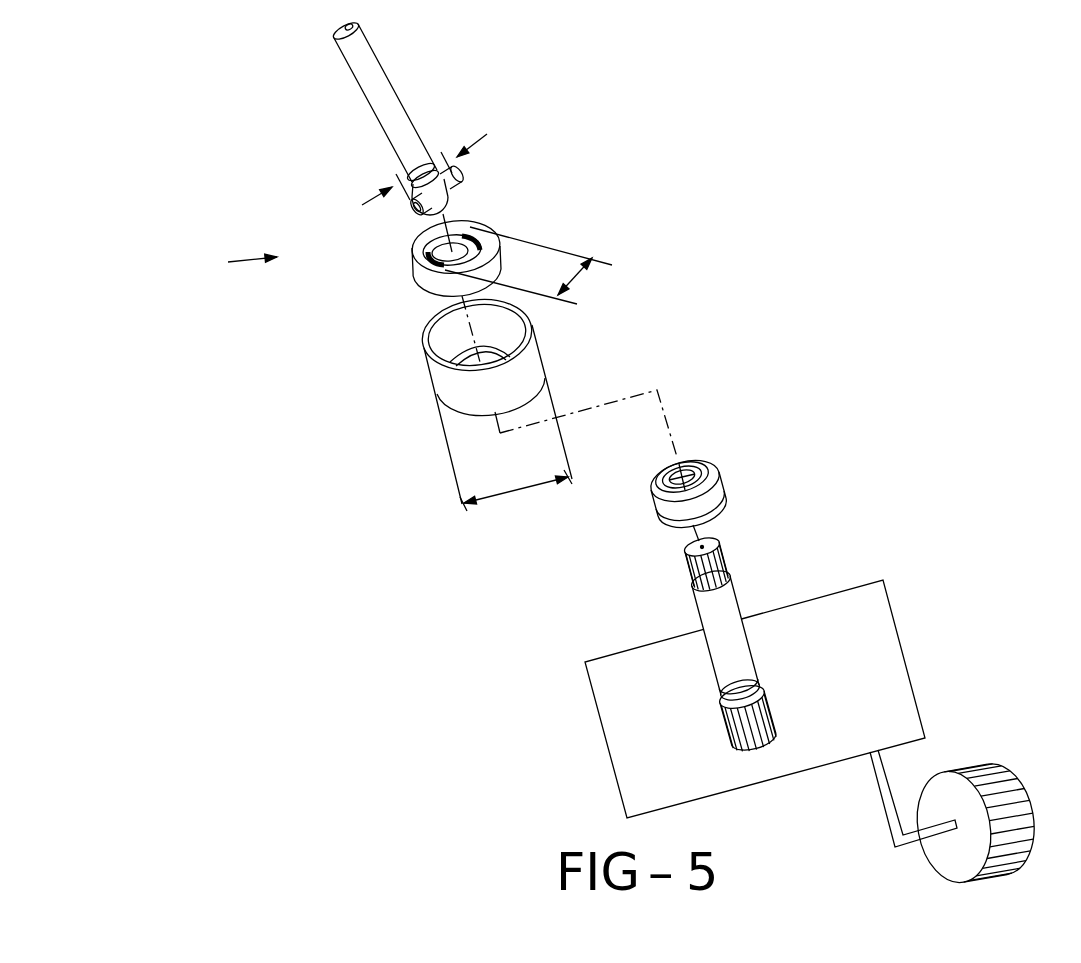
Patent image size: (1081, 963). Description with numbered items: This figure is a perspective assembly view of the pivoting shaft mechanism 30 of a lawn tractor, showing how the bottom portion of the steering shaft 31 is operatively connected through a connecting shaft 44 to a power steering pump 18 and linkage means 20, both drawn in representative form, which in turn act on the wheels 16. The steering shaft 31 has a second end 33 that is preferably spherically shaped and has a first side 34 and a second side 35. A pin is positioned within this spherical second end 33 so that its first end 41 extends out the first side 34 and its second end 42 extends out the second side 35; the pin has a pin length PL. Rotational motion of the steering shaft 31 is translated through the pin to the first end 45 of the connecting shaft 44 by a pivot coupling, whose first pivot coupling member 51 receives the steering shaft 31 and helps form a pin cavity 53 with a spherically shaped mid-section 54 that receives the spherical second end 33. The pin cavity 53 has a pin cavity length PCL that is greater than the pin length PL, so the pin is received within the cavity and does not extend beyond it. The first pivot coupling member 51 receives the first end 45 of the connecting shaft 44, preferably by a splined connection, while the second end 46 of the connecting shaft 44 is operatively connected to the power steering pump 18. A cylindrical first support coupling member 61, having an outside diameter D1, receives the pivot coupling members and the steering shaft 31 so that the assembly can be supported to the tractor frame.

The wheels 16 is at (997, 770).
The power steering pump 18 is at (870, 602).
The linkage means 20 is at (882, 768).
The pivoting shaft mechanism 30 is at (231, 263).
The steering shaft 31 is at (365, 62).
The second end 33 is at (455, 209).
The first side 34 is at (465, 192).
The second side 35 is at (425, 240).
The first end 41 is at (462, 171).
The second end 42 is at (412, 212).
The connecting shaft 44 is at (723, 610).
The first end 45 is at (727, 553).
The second end 46 is at (777, 698).
The first pivot coupling member 51 is at (441, 284).
The pin cavity 53 is at (485, 228).
The mid-section 54 is at (425, 252).
The first support coupling member 61 is at (438, 374).
The pin length PL is at (439, 158).
The pin cavity length PCL is at (580, 278).
The outside diameter D1 is at (517, 485).